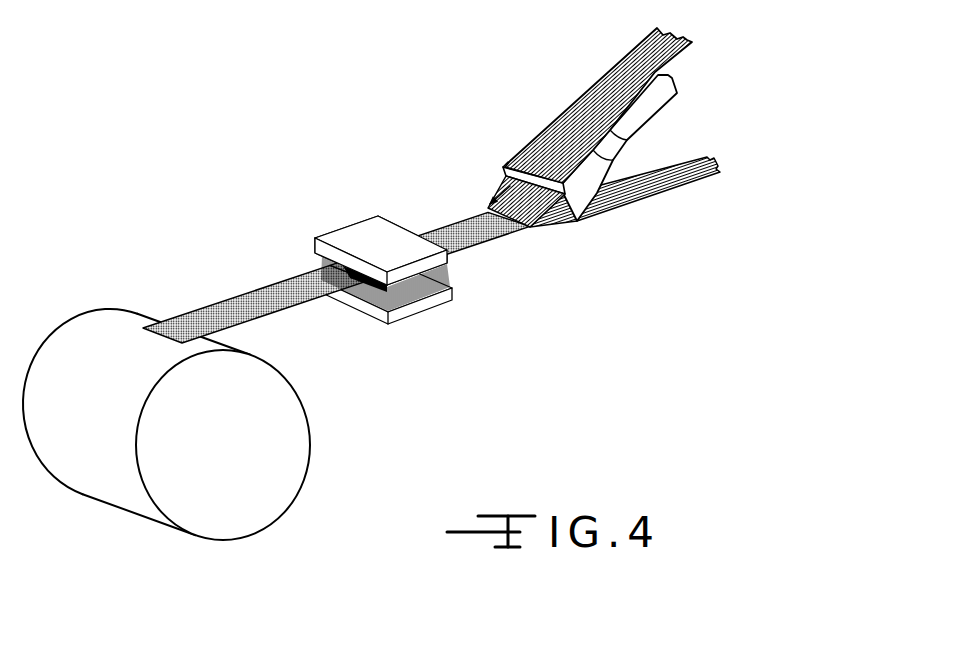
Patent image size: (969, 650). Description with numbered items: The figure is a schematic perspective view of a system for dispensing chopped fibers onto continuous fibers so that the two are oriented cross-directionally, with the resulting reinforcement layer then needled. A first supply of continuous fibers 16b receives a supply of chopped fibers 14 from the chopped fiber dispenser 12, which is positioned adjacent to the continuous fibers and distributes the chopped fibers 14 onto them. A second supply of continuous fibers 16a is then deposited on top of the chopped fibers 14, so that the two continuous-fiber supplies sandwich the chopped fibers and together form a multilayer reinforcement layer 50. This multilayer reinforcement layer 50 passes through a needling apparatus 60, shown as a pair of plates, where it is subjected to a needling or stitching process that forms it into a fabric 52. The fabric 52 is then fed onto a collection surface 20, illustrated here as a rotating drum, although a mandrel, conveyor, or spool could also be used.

The chopped fiber dispenser 12 is at (606, 168).
The chopped fibers 14 is at (505, 236).
The second supply of continuous fibers 16a is at (568, 110).
The first supply of continuous fibers 16b is at (620, 205).
The collection surface 20 is at (293, 493).
The multilayer reinforcement layer 50 is at (455, 226).
The fabric 52 is at (218, 302).
The needling apparatus 60 is at (352, 226).